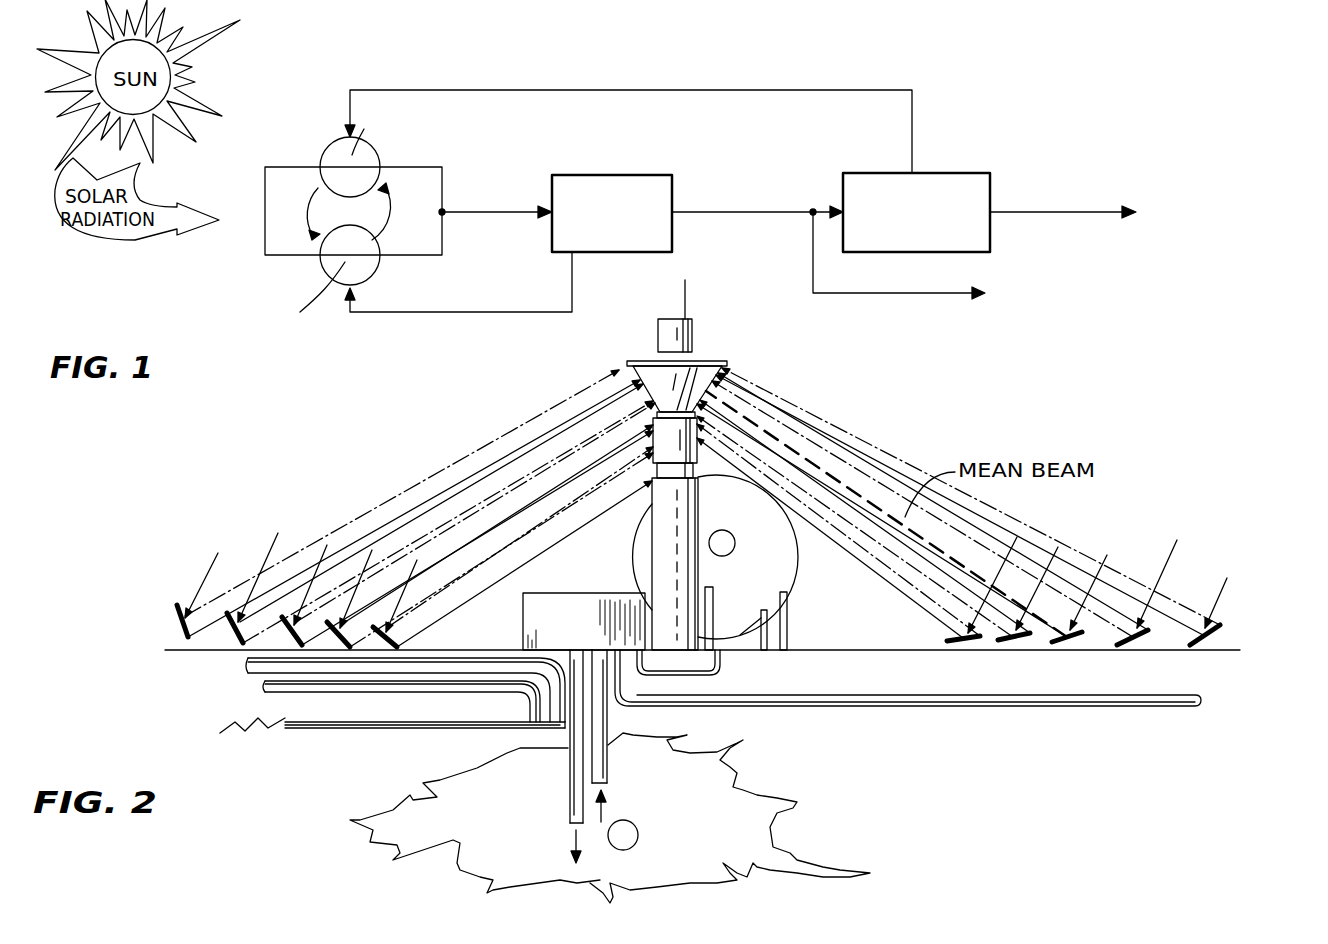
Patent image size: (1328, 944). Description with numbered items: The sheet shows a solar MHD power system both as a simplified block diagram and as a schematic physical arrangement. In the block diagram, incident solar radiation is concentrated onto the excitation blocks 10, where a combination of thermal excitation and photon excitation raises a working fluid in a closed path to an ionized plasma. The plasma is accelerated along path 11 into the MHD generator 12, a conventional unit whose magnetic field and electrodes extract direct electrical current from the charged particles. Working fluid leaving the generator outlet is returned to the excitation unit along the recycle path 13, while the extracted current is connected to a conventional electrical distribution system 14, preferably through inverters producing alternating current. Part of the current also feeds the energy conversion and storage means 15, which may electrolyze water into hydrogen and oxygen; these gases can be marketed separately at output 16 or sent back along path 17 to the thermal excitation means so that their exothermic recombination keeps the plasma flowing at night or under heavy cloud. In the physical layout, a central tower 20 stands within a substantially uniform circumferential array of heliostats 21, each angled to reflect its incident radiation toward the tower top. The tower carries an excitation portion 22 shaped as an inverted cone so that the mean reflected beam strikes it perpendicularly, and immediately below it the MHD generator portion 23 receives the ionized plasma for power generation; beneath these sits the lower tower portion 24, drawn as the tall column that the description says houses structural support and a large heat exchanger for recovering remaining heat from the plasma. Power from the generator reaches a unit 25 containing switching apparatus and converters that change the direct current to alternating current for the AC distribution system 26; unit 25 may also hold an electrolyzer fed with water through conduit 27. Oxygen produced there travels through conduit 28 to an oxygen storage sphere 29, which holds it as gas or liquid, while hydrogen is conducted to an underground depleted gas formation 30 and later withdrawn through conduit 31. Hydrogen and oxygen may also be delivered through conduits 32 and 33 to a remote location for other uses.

In FIG. 1, the thermal excitation means 10 is at (307, 266).
In FIG. 1, the plasma acceleration path 11 is at (500, 218).
In FIG. 1, the MHD generator 12 is at (564, 254).
In FIG. 1, the working fluid recycle path 13 is at (572, 316).
In FIG. 1, the electrical distribution system connection 14 is at (813, 279).
In FIG. 1, the energy conversion and storage means 15 is at (950, 173).
In FIG. 1, the gas distribution output 16 is at (1136, 197).
In FIG. 1, the hydrogen and oxygen return path 17 is at (797, 90).
In FIG. 2, the central tower 20 is at (656, 337).
In FIG. 2, the heliostats 21 is at (342, 625).
In FIG. 2, the excitation portion 22 is at (641, 392).
In FIG. 2, the MHD generator portion 23 is at (655, 458).
In FIG. 2, the tower column 24 is at (652, 555).
In FIG. 2, the switching and conversion unit 25 is at (550, 593).
In FIG. 2, the AC distribution system 26 is at (429, 731).
In FIG. 2, the water supply conduit 27 is at (850, 703).
In FIG. 2, the oxygen conduit 28 is at (719, 672).
In FIG. 2, the oxygen storage sphere 29 is at (796, 568).
In FIG. 2, the underground depleted gas formation 30 is at (514, 825).
In FIG. 2, the hydrogen removal conduit 31 is at (608, 777).
In FIG. 2, the hydrogen delivery conduit 32 is at (377, 666).
In FIG. 2, the oxygen delivery conduit 33 is at (468, 693).